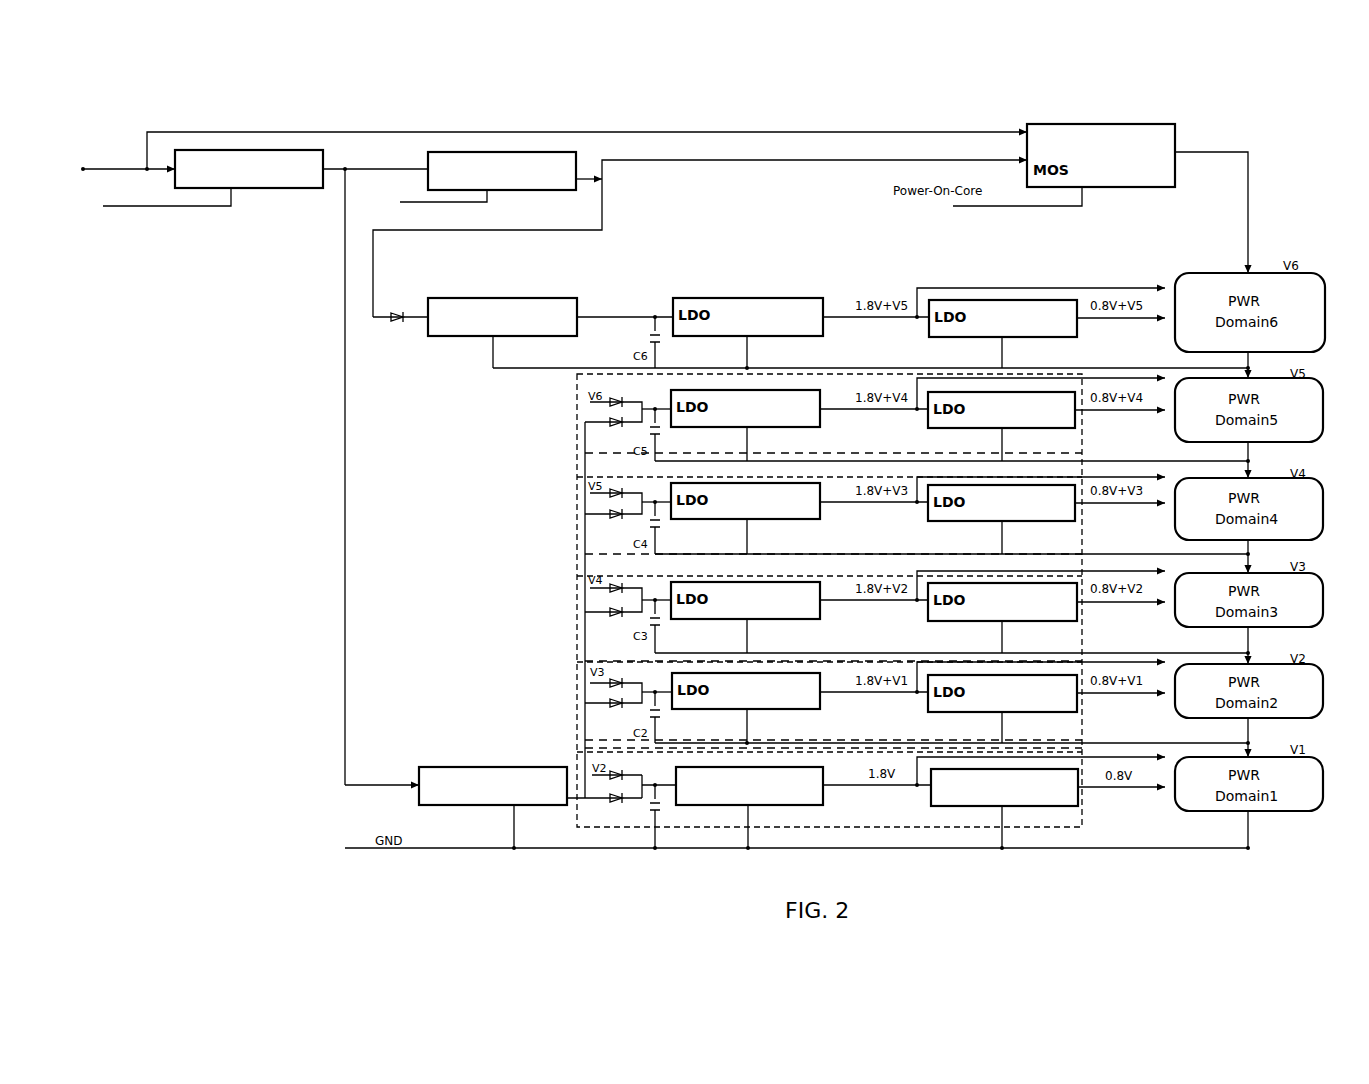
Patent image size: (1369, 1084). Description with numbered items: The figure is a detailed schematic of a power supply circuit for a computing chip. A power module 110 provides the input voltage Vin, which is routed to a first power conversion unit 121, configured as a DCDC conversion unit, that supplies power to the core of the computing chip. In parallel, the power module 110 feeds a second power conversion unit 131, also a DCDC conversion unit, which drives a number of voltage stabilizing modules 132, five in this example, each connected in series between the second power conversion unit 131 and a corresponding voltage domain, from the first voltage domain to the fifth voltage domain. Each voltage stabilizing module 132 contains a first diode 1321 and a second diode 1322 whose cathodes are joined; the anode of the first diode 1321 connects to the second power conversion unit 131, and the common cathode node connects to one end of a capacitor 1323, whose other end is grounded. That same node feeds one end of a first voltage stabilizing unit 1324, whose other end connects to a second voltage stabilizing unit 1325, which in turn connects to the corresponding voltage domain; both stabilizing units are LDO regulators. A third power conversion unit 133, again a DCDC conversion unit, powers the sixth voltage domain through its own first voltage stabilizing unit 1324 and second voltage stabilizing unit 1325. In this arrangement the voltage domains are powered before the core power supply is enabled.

The power module 110 is at (95, 163).
The first power conversion unit 121 is at (515, 152).
The second power conversion unit 131 is at (477, 767).
The voltage stabilizing module 132 is at (577, 432).
The third power conversion unit 133 is at (490, 298).
The first diode 1321 is at (614, 800).
The second diode 1322 is at (620, 778).
The capacitor 1323 is at (657, 812).
The first voltage stabilizing unit 1324 is at (823, 800).
The second voltage stabilizing unit 1325 is at (931, 806).